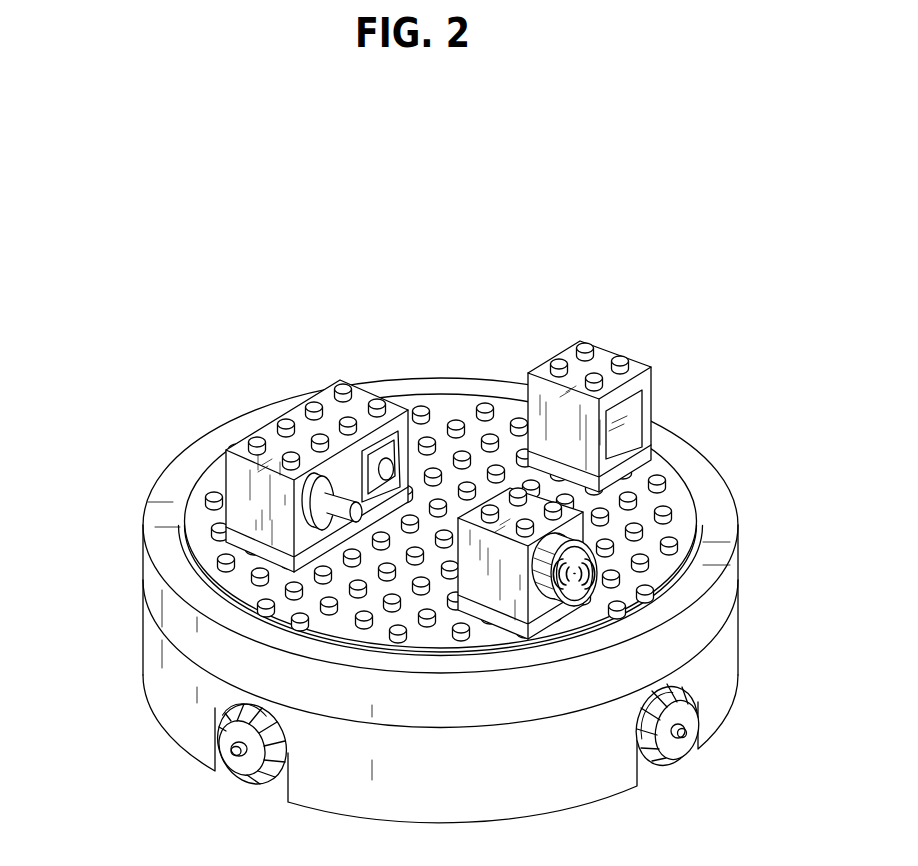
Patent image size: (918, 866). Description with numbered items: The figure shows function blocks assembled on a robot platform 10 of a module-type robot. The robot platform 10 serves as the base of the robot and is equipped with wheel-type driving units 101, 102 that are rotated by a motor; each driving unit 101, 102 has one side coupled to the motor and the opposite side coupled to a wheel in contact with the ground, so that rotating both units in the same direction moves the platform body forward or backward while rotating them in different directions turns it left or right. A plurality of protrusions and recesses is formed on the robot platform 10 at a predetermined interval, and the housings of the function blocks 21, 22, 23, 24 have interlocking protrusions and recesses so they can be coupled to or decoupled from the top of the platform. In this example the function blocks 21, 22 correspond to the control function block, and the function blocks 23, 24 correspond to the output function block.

The robot platform 10 is at (147, 645).
The driving unit 101 is at (253, 765).
The driving unit 102 is at (670, 750).
The function block 21 is at (281, 415).
The function block 22 is at (360, 395).
The function block 23 is at (517, 607).
The function block 24 is at (605, 352).